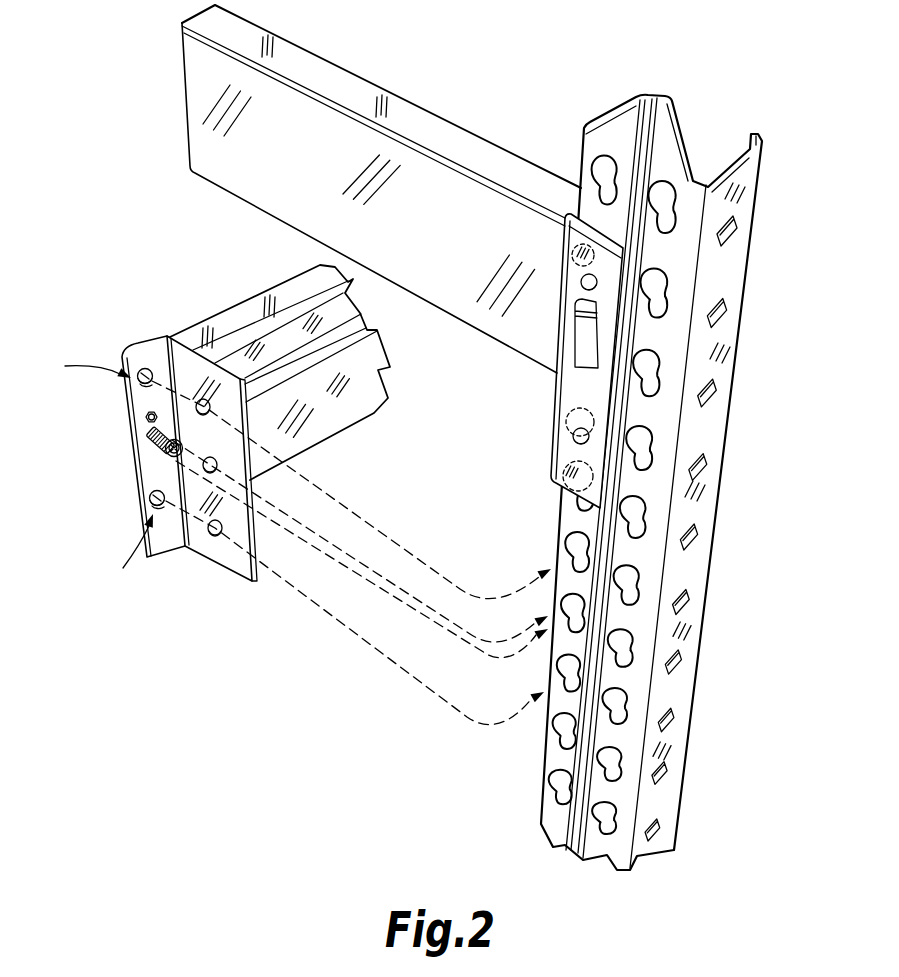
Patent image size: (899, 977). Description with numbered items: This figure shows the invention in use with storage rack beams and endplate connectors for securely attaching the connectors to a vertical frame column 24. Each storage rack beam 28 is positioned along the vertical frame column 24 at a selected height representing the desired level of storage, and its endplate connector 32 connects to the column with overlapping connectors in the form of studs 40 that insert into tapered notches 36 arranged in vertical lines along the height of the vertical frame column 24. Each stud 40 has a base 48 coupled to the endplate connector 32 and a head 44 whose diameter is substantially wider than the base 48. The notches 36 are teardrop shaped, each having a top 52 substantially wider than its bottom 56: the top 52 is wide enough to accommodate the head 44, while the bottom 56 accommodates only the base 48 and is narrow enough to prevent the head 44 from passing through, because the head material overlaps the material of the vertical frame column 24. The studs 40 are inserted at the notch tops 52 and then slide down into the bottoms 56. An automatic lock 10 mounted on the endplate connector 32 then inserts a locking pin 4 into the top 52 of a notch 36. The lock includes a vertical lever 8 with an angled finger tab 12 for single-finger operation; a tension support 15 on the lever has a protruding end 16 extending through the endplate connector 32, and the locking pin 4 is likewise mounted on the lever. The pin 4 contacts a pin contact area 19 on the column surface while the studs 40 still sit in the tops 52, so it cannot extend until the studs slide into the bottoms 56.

The locking pin 4 is at (146, 418).
The vertical lever 8 is at (582, 342).
The automatic lock 10 is at (131, 445).
The finger tab 12 is at (573, 288).
The tension support 15 is at (167, 455).
The protruding end 16 is at (172, 449).
The pin contact area 19 is at (562, 645).
The vertical frame column 24 is at (617, 105).
The storage rack beam 28 is at (358, 90).
The endplate connector 32 is at (148, 357).
The tapered notch 36 is at (673, 208).
The stud 40 is at (98, 471).
The head 44 is at (147, 383).
The base 48 is at (138, 372).
The top 52 is at (655, 283).
The bottom 56 is at (655, 307).